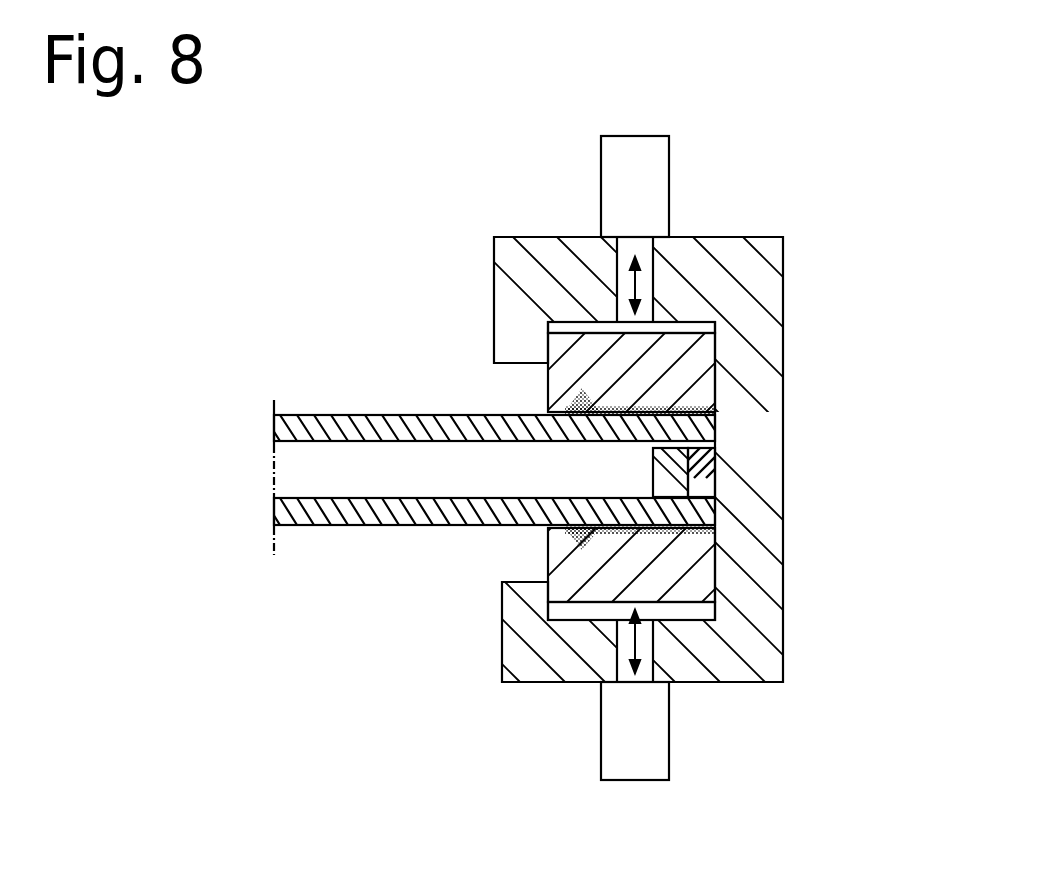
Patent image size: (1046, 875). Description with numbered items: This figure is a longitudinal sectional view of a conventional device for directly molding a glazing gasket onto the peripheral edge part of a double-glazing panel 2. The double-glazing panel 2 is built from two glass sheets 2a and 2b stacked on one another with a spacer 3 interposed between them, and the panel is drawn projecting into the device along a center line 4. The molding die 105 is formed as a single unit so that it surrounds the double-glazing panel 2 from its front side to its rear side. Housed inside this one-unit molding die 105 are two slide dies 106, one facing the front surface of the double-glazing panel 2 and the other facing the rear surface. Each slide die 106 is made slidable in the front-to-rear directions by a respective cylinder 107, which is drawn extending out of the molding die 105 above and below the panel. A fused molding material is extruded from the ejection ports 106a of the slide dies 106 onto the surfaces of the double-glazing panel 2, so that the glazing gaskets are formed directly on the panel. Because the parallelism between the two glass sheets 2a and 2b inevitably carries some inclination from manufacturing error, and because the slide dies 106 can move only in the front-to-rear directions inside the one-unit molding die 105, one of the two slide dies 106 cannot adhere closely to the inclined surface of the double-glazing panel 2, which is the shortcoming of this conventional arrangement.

The double-glazing panel 2 is at (492, 428).
The glass sheet 2a is at (323, 423).
The glass sheet 2b is at (313, 510).
The spacer 3 is at (653, 463).
The tube axis 4 is at (287, 468).
The molding die 105 is at (786, 478).
The slide die 106 is at (560, 353).
The ejection port 106a is at (668, 402).
The cylinder 107 is at (653, 175).